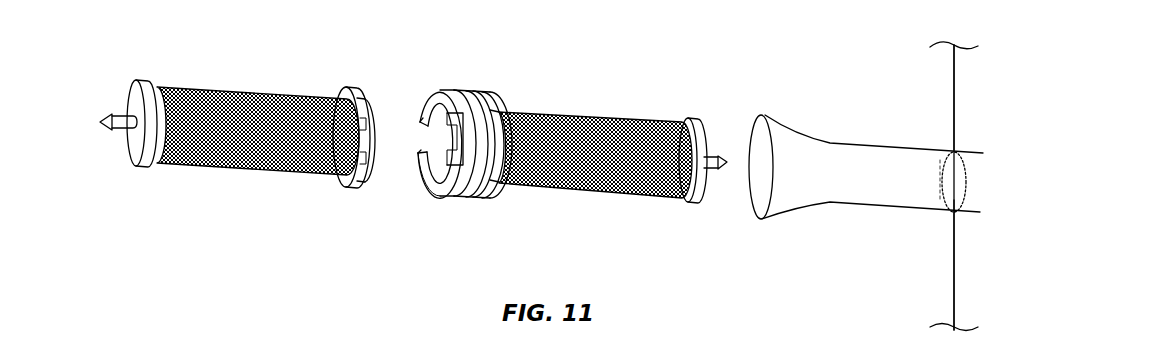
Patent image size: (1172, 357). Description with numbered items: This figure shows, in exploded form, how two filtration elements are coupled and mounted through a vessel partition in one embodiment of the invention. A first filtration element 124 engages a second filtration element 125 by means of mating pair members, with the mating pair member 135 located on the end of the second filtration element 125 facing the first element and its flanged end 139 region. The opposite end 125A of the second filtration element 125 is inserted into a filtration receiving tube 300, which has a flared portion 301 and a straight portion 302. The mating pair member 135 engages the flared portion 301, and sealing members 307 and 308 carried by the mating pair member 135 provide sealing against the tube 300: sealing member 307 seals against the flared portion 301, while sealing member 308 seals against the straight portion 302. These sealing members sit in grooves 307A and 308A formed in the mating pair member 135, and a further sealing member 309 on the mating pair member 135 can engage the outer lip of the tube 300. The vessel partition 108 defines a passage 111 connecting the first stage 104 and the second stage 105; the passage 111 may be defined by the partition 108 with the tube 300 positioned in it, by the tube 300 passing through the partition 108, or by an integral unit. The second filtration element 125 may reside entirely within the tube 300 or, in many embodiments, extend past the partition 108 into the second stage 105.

The first filtration element 124 is at (236, 89).
The cartridge flange end 139 is at (342, 194).
The mating pair member 135 is at (443, 87).
The sealing member 309 is at (471, 89).
The sealing member 307 is at (467, 203).
The groove 307A is at (440, 200).
The sealing member 308 is at (488, 200).
The groove 308A is at (521, 198).
The second filtration element 125 is at (566, 113).
The end of second filtration element 125A is at (688, 112).
The filtration receiving tube 300 is at (890, 198).
The flared portion 301 is at (818, 208).
The straight portion 302 is at (914, 213).
The passage 111 is at (979, 183).
The vessel partition 108 is at (966, 73).
The second stage 105 is at (1067, 77).
The first stage 104 is at (824, 61).